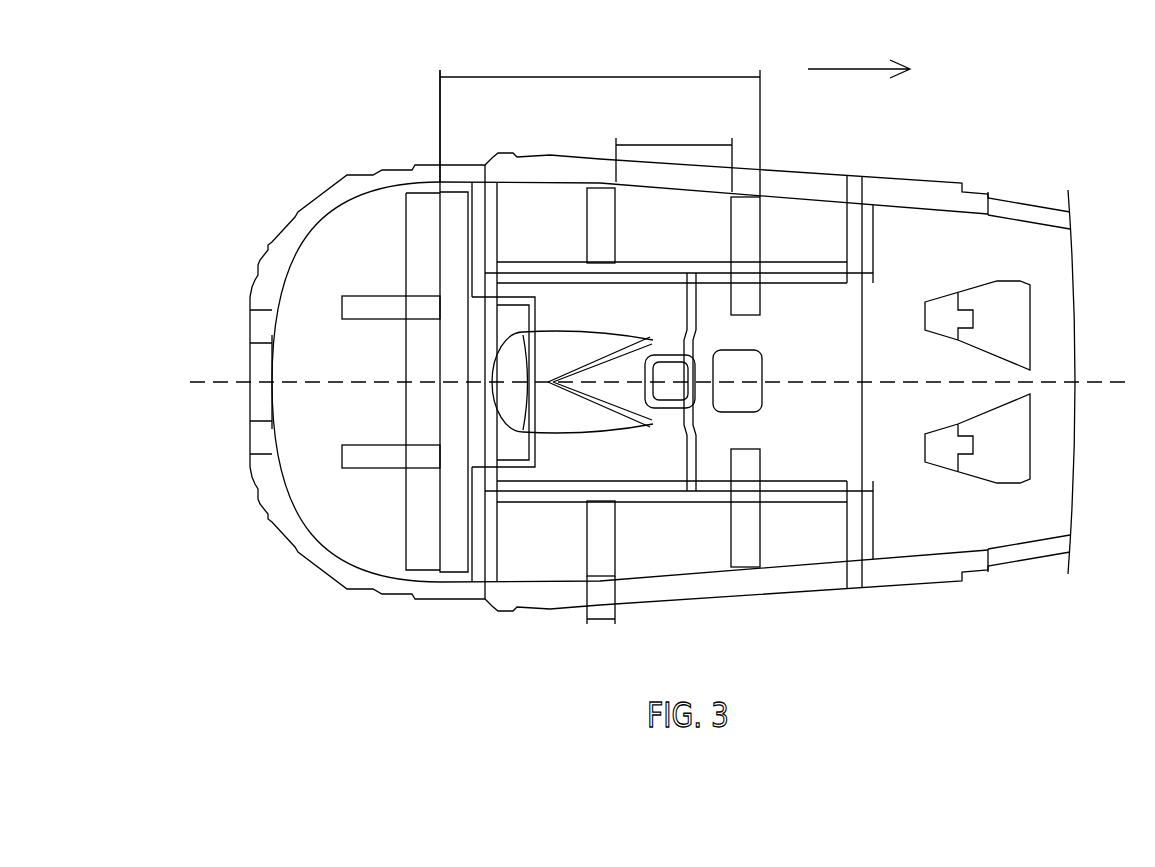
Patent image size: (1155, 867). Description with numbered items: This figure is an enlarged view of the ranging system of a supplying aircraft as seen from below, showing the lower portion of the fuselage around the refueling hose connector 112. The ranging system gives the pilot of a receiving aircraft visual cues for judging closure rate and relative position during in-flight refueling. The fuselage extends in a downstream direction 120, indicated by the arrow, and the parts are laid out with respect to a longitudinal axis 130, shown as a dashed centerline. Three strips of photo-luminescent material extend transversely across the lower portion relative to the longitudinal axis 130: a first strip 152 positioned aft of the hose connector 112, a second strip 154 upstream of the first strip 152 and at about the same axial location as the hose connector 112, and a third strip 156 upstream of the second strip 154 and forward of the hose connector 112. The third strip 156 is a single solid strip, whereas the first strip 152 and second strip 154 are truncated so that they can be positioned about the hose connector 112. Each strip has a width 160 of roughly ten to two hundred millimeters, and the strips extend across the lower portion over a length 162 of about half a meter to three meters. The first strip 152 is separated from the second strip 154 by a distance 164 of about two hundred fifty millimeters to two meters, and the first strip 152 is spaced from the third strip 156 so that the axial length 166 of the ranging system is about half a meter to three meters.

The hose connector 112 is at (570, 432).
The downstream direction 120 is at (845, 69).
The longitudinal axis 130 is at (1120, 382).
The first strip 152 is at (748, 234).
The second strip 154 is at (603, 200).
The third strip 156 is at (457, 207).
The width 160 is at (597, 620).
The length 162 is at (406, 277).
The distance 164 is at (674, 145).
The axial length 166 is at (547, 77).